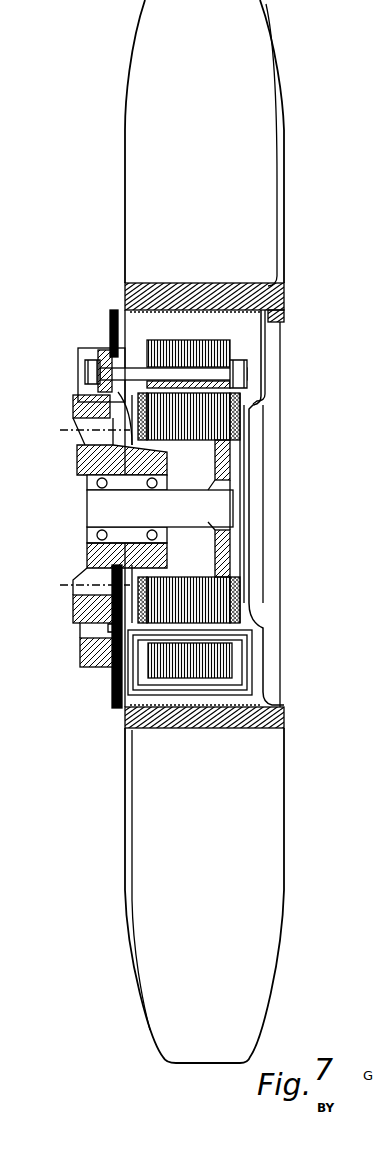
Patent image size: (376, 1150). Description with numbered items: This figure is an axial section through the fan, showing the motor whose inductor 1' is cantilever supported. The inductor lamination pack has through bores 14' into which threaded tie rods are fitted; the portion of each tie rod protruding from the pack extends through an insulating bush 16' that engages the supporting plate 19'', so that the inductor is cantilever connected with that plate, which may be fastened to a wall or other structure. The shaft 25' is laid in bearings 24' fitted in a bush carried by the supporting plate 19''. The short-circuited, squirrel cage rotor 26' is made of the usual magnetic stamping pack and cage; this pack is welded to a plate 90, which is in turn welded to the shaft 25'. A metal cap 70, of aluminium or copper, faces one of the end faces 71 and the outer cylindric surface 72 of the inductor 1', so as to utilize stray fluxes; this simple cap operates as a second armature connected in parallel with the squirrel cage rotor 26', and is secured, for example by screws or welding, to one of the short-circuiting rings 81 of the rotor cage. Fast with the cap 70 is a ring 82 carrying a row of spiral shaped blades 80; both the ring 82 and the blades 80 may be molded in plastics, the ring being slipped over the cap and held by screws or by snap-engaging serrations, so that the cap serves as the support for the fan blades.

The inductor 1' is at (289, 486).
The through bore 14' is at (144, 336).
The bush 16' is at (78, 333).
The supporting plate 19'' is at (75, 396).
The bearings 24' is at (94, 576).
The shaft 25' is at (215, 537).
The short-circuited rotor 26' is at (239, 604).
The metal cap 70 is at (267, 663).
The end face 71 is at (232, 350).
The outer cylindric surface 72 is at (198, 342).
The spiral shaped blades 80 is at (263, 772).
The short-circuiting ring 81 is at (240, 405).
The ring 82 is at (282, 285).
The plate 90 is at (232, 462).